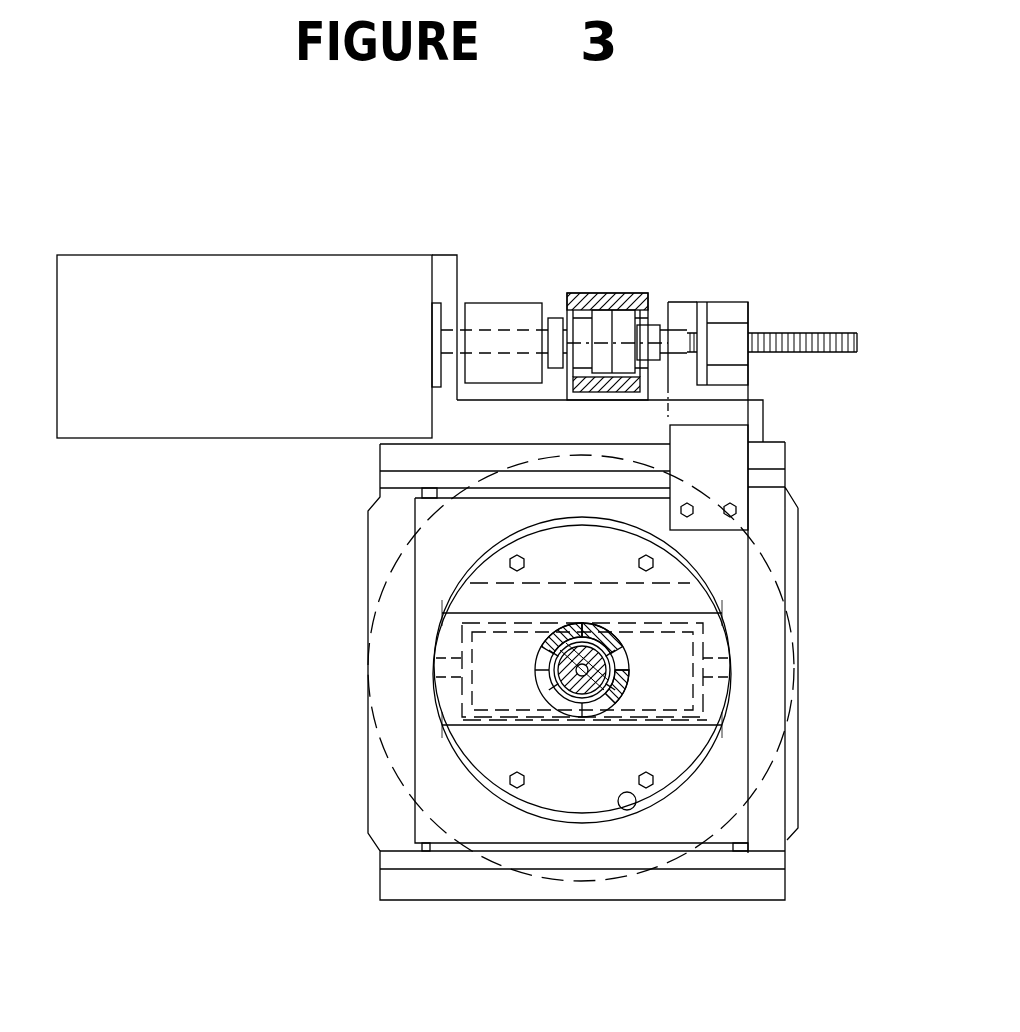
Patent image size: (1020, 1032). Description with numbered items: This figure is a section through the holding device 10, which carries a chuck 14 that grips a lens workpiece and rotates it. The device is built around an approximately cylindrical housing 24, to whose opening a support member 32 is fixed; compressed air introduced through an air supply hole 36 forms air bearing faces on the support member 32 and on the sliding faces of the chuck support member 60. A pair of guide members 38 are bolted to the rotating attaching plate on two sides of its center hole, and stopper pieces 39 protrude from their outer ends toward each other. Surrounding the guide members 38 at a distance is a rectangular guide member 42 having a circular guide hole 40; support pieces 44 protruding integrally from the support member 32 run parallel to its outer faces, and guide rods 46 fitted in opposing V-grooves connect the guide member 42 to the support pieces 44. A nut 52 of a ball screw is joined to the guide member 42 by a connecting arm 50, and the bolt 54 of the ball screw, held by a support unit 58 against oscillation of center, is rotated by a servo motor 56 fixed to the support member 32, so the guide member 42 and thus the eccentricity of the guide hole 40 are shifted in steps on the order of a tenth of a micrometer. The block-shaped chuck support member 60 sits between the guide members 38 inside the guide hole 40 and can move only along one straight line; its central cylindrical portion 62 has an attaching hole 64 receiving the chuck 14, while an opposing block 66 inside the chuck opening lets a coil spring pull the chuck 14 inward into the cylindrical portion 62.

The holding device 10 is at (585, 220).
The chuck 14 is at (617, 668).
The housing 24 is at (808, 513).
The support member 32 is at (786, 438).
The air supply hole 36 is at (697, 693).
The guide members 38 is at (560, 543).
The stopper pieces 39 is at (442, 613).
The guide hole 40 is at (632, 810).
The guide member 42 is at (713, 780).
The support pieces 44 is at (392, 480).
The guide rods 46 is at (433, 488).
The connecting arm 50 is at (725, 462).
The nut 52 is at (720, 348).
The bolt 54 is at (790, 333).
The servo motor 56 is at (252, 290).
The support unit 58 is at (602, 288).
The chuck support member 60 is at (717, 655).
The cylindrical portion 62 is at (615, 640).
The attaching hole 64 is at (578, 697).
The opposing block 66 is at (536, 664).